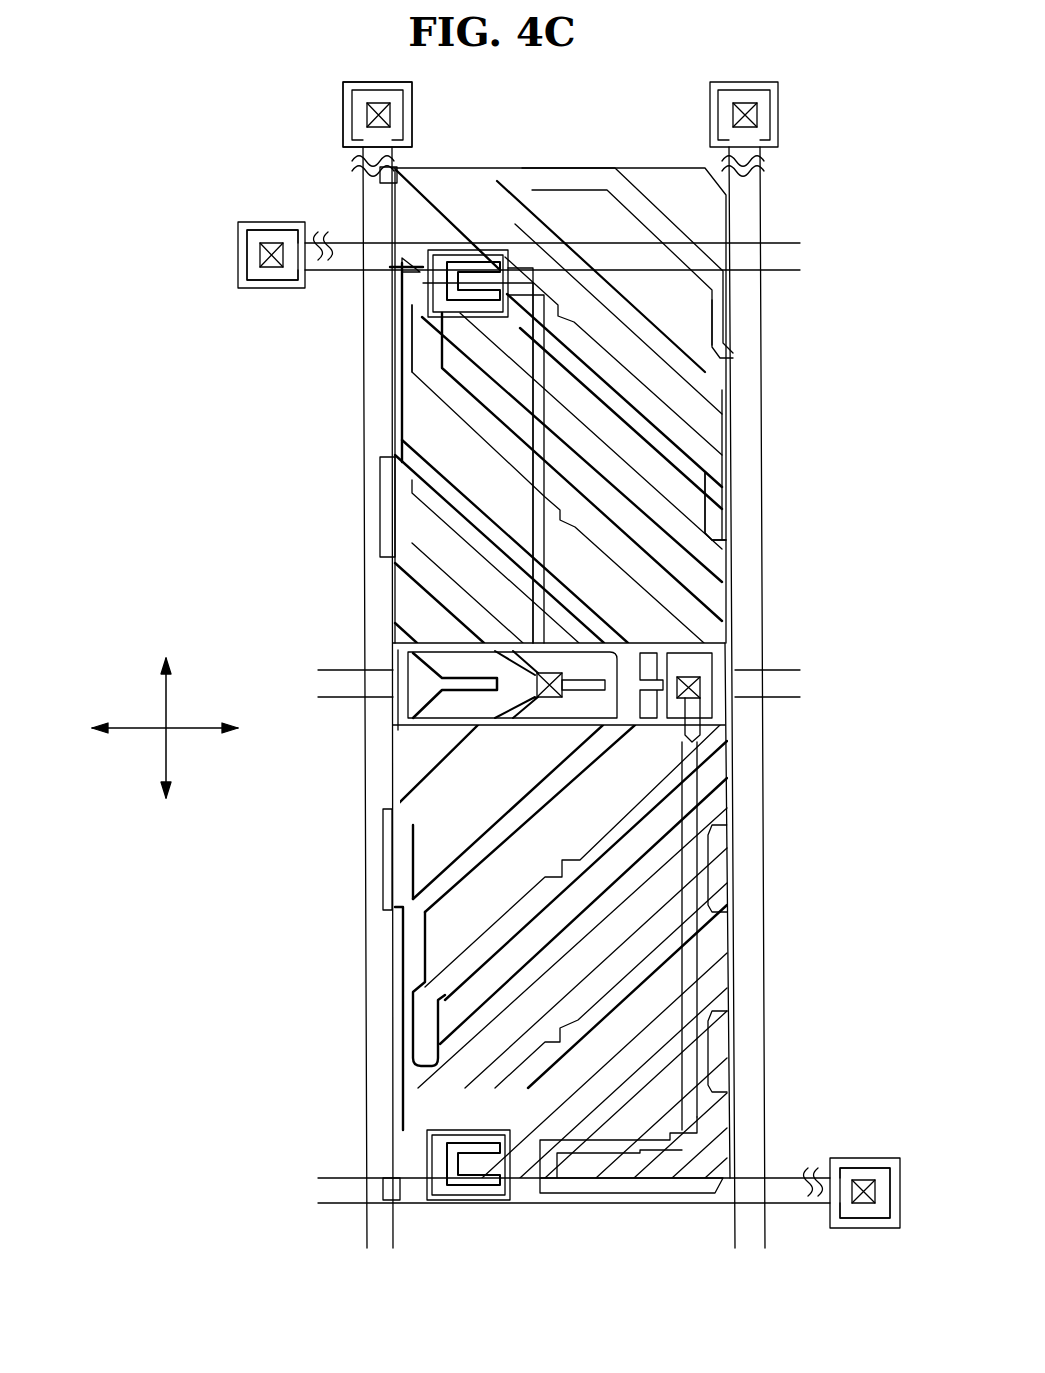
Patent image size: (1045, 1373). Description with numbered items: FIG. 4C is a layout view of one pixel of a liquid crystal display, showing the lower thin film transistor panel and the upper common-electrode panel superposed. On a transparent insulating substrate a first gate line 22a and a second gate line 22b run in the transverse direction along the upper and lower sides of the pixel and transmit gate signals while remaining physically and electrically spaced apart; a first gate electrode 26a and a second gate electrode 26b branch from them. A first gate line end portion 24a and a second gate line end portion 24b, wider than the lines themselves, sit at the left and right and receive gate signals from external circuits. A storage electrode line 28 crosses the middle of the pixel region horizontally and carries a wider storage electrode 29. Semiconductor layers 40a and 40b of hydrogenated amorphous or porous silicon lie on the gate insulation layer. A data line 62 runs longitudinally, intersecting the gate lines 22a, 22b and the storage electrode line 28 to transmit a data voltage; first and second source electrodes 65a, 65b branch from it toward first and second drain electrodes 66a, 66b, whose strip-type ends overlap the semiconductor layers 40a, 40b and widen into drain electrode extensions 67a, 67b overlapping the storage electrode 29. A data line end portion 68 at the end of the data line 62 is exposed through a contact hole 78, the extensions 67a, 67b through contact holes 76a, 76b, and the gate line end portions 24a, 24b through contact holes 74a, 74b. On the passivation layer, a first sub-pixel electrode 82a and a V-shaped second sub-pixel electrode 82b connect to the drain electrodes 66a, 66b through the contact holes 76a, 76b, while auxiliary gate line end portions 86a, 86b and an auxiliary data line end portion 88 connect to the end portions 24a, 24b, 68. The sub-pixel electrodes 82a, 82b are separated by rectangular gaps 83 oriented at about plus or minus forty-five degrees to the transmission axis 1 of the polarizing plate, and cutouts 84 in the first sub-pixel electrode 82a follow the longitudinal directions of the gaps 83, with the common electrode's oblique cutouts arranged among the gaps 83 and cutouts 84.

The transmission axis of polarizing plate 1 is at (128, 673).
The first gate line 22a is at (647, 237).
The second gate line 22b is at (687, 1210).
The first gate line end portion 24a is at (262, 232).
The second gate line end portion 24b is at (863, 1228).
The first gate electrode 26a is at (417, 282).
The second gate electrode 26b is at (457, 1130).
The storage electrode line 28 is at (800, 670).
The storage electrode 29 is at (445, 725).
The semiconductor layer 40a is at (455, 343).
The semiconductor layer 40b is at (457, 1200).
The data line 62 is at (367, 578).
The first source electrode 65a is at (482, 260).
The second source electrode 65b is at (487, 1202).
The first drain electrode 66a is at (470, 492).
The second drain electrode 66b is at (615, 1153).
The drain electrode extension 67a is at (515, 725).
The drain electrode extension 67b is at (703, 640).
The data line end portion 68 is at (343, 128).
The contact hole 74a is at (262, 253).
The contact hole 74b is at (863, 1180).
The contact hole 76a is at (550, 672).
The contact hole 76b is at (700, 725).
The contact hole 78 is at (385, 113).
The first sub-pixel electrode 82a is at (590, 425).
The second sub-pixel electrode 82b is at (660, 535).
The gap 83 is at (625, 470).
The cutout 84 is at (660, 308).
The auxiliary gate line end portion 86a is at (238, 238).
The auxiliary gate line end portion 86b is at (843, 1160).
The auxiliary data line end portion 88 is at (412, 92).